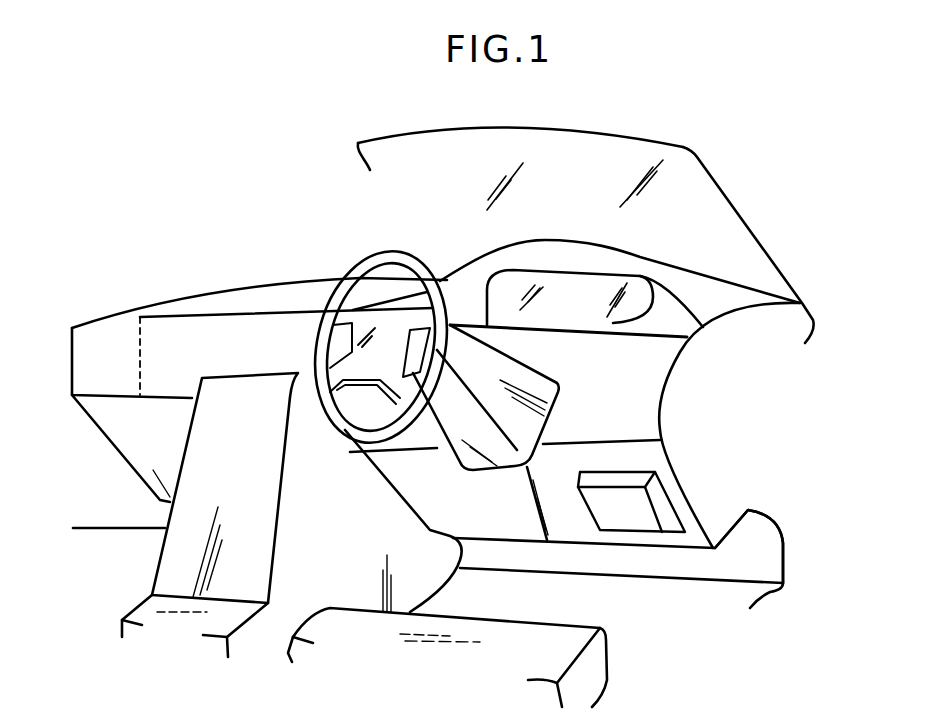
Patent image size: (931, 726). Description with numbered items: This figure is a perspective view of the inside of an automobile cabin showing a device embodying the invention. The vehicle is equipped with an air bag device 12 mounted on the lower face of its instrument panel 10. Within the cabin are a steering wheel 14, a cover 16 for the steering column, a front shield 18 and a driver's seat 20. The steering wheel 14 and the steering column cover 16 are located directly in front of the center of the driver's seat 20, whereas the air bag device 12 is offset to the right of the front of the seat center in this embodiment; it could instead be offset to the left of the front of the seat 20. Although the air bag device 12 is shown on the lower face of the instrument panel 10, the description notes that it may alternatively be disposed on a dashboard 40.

The instrument panel 10 is at (637, 405).
The air bag device 12 is at (643, 520).
The steering wheel 14 is at (337, 440).
The steering column cover 16 is at (505, 423).
The front shield 18 is at (717, 222).
The driver's seat 20 is at (587, 637).
The dashboard 40 is at (753, 557).